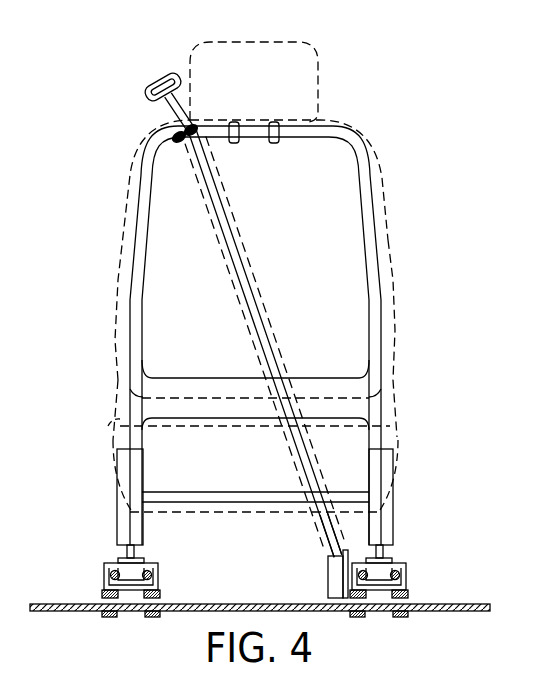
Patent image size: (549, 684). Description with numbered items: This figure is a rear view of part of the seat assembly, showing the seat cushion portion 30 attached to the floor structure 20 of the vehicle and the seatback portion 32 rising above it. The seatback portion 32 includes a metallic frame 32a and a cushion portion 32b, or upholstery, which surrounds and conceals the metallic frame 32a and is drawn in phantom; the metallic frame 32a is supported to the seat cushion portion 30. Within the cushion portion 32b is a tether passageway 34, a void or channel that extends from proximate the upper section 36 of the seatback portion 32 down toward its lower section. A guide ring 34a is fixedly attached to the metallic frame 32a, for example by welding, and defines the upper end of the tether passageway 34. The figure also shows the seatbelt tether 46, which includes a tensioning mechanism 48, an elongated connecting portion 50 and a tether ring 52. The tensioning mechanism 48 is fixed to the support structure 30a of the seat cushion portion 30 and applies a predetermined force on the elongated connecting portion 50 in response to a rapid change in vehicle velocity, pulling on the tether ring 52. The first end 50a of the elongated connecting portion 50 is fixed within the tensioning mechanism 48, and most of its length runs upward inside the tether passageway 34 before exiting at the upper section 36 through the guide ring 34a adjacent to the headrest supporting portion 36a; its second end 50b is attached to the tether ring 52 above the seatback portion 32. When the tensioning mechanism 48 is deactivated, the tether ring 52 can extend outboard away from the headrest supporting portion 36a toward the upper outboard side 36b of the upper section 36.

The floor structure 20 is at (463, 604).
The seat cushion portion 30 is at (400, 440).
The support structure 30a is at (407, 577).
The seatback portion 32 is at (395, 275).
The metallic frame 32a is at (364, 173).
The cushion portion 32b is at (389, 217).
The tether passageway 34 is at (234, 231).
The guide ring 34a is at (173, 138).
The upper section 36 is at (216, 125).
The headrest supporting portion 36a is at (237, 143).
The upper outboard side 36b is at (123, 216).
The seatbelt tether 46 is at (150, 119).
The tensioning mechanism 48 is at (338, 577).
The elongated connecting portion 50 is at (264, 318).
The first end 50a is at (325, 533).
The second end 50b is at (188, 88).
The tether ring 52 is at (147, 85).